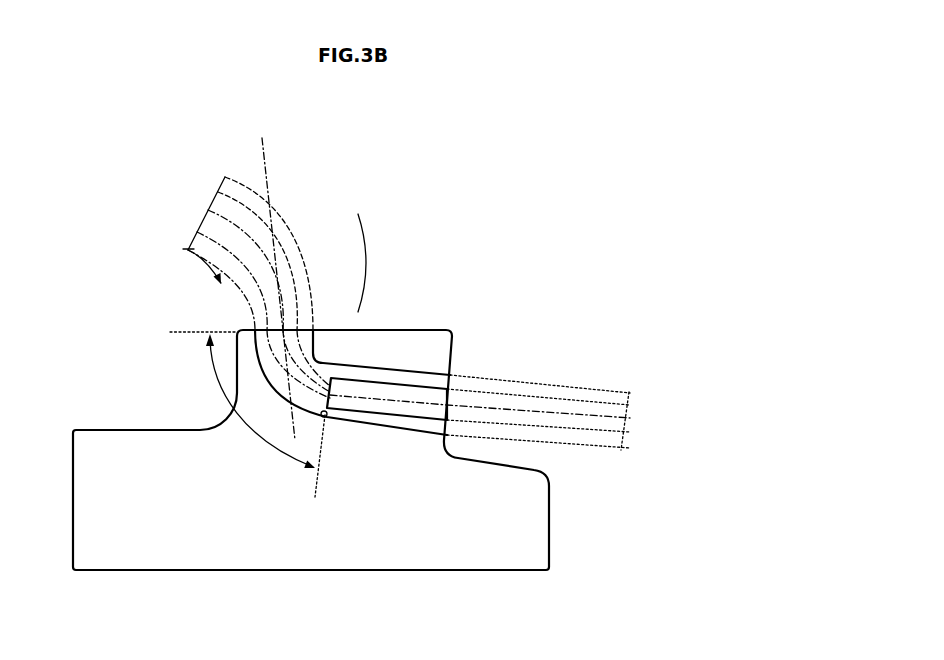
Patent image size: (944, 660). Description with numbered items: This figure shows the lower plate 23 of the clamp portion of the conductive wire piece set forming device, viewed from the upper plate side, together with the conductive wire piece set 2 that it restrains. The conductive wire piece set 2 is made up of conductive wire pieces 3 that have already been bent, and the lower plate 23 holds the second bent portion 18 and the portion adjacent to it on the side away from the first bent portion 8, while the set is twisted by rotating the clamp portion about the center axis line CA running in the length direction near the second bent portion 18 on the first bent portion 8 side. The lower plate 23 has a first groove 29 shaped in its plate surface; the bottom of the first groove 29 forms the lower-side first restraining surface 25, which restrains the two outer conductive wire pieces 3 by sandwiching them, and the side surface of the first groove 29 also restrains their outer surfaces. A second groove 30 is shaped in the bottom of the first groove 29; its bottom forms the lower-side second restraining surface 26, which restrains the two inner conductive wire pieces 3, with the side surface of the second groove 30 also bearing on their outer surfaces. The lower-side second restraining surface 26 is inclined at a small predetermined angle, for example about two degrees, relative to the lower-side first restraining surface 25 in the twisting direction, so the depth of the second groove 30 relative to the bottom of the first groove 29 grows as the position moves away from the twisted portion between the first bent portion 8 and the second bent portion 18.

The conductive wire piece set 2 is at (370, 263).
The conductive wire pieces 3 is at (225, 291).
The first bent portion 8 is at (207, 265).
The second bent portion 18 is at (218, 376).
The lower plate 23 is at (548, 536).
The lower-side first restraining surface 25 is at (446, 380).
The lower-side second restraining surface 26 is at (450, 400).
The first groove 29 is at (330, 413).
The second groove 30 is at (407, 413).
The center axis line CA is at (266, 146).